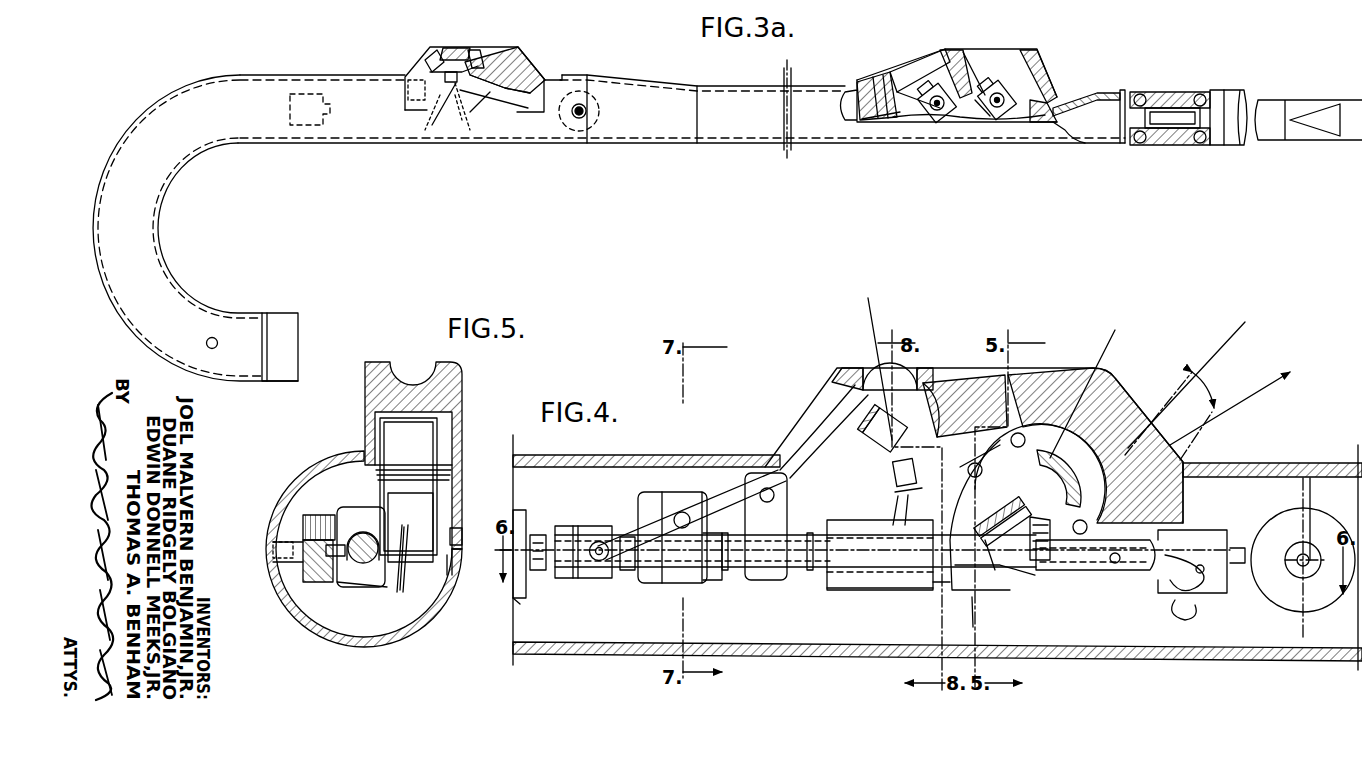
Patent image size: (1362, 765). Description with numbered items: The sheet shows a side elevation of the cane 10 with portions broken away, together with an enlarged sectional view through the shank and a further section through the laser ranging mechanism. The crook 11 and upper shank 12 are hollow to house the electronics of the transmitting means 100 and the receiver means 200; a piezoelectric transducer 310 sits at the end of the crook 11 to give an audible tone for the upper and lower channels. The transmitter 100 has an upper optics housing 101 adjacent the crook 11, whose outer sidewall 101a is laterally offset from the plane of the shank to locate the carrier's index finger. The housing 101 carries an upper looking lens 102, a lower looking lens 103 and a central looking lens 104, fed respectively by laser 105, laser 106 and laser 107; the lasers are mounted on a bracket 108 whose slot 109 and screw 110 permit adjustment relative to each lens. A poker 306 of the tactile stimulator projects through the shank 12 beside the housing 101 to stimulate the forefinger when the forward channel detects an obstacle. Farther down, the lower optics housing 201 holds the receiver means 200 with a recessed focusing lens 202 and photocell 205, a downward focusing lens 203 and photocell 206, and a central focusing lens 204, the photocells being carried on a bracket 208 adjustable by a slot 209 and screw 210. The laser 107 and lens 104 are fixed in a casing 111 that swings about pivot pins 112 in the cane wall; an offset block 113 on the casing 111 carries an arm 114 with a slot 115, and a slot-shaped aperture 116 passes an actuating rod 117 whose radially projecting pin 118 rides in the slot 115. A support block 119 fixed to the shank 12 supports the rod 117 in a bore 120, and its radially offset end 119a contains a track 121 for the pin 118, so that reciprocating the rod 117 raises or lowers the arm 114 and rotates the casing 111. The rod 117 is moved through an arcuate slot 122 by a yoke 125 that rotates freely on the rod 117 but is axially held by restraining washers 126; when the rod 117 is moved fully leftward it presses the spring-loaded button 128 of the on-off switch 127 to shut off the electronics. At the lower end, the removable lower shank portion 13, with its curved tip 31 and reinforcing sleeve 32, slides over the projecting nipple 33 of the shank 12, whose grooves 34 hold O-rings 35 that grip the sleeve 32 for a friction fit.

In FIG. 5, the cane 10 is at (320, 458).
In FIG. 4, the cane 10 is at (650, 456).
In FIG. 3A, the crook 11 is at (637, 75).
In FIG. 3A, the upper shank 12 is at (720, 130).
In FIG. 5, the upper shank 12 is at (272, 512).
In FIG. 4, the upper shank 12 is at (842, 656).
In FIG. 3A, the lower shank portion 13 is at (1180, 90).
In FIG. 3A, the curved tip 31 is at (1322, 138).
In FIG. 3A, the reinforcing sleeve 32 is at (1217, 147).
In FIG. 3A, the projecting nipple 33 is at (1162, 108).
In FIG. 3A, the grooves 34 is at (1166, 126).
In FIG. 3A, the O-rings 35 is at (1138, 143).
In FIG. 3A, the transmitting means 100 is at (404, 66).
In FIG. 5, the transmitting means 100 is at (364, 408).
In FIG. 4, the transmitting means 100 is at (808, 420).
In FIG. 3A, the upper optics housing 101 is at (522, 33).
In FIG. 5, the upper optics housing 101 is at (503, 381).
In FIG. 4, the upper optics housing 101 is at (800, 425).
In FIG. 5, the outer sidewall 101a is at (524, 416).
In FIG. 3A, the upper looking recessed lens 102 is at (452, 47).
In FIG. 4, the upper looking recessed lens 102 is at (855, 372).
In FIG. 3A, the lower looking recessed lens 103 is at (477, 50).
In FIG. 4, the lower looking recessed lens 103 is at (958, 418).
In FIG. 3A, the central looking recessed lens 104 is at (530, 68).
In FIG. 4, the central looking recessed lens 104 is at (1085, 478).
In FIG. 3A, the laser 105 is at (447, 84).
In FIG. 4, the laser 105 is at (895, 484).
In FIG. 3A, the laser 106 is at (430, 60).
In FIG. 4, the laser 106 is at (890, 428).
In FIG. 3A, the laser 107 is at (492, 98).
In FIG. 4, the laser 107 is at (1040, 482).
In FIG. 3A, the bracket 108 is at (404, 92).
In FIG. 4, the bracket 108 is at (880, 505).
In FIG. 3A, the slot 109 is at (405, 110).
In FIG. 3A, the screw 110 is at (444, 90).
In FIG. 3A, the casing 111 is at (503, 100).
In FIG. 5, the casing 111 is at (430, 442).
In FIG. 4, the casing 111 is at (1032, 624).
In FIG. 5, the pivot pins 112 is at (345, 518).
In FIG. 4, the pivot pins 112 is at (950, 590).
In FIG. 5, the offset block 113 is at (385, 598).
In FIG. 4, the offset block 113 is at (989, 583).
In FIG. 4, the arm 114 is at (1190, 545).
In FIG. 4, the slot 115 is at (1204, 572).
In FIG. 5, the slot-shaped aperture 116 is at (362, 528).
In FIG. 5, the actuating rod 117 is at (360, 563).
In FIG. 4, the actuating rod 117 is at (770, 560).
In FIG. 5, the pin 118 is at (327, 582).
In FIG. 4, the pin 118 is at (1100, 568).
In FIG. 5, the support block 119 is at (298, 578).
In FIG. 4, the support block 119 is at (875, 590).
In FIG. 4, the radially offset end 119a is at (880, 555).
In FIG. 4, the bore 120 is at (860, 588).
In FIG. 4, the track 121 is at (1218, 540).
In FIG. 4, the arcuate slot 122 is at (617, 528).
In FIG. 4, the yoke 125 is at (640, 500).
In FIG. 4, the restraining washers 126 is at (628, 572).
In FIG. 3A, the on-off switch 127 is at (305, 125).
In FIG. 4, the on-off switch 127 is at (524, 596).
In FIG. 3A, the spring-loaded button 128 is at (206, 343).
In FIG. 4, the spring-loaded button 128 is at (537, 533).
In FIG. 3A, the receiver means 200 is at (1040, 52).
In FIG. 3A, the lower optics housing 201 is at (915, 66).
In FIG. 3A, the recessed focusing lens 202 is at (882, 88).
In FIG. 3A, the downward focusing lens 203 is at (1050, 80).
In FIG. 3A, the central focusing lens 204 is at (962, 70).
In FIG. 3A, the photocell 205 is at (880, 120).
In FIG. 3A, the photocell 206 is at (1022, 108).
In FIG. 3A, the bracket 208 is at (940, 114).
In FIG. 3A, the slot 209 is at (980, 98).
In FIG. 3A, the screw 210 is at (937, 96).
In FIG. 3A, the poker 306 is at (578, 118).
In FIG. 4, the poker 306 is at (1297, 568).
In FIG. 3A, the piezoelectric transducer 310 is at (284, 313).